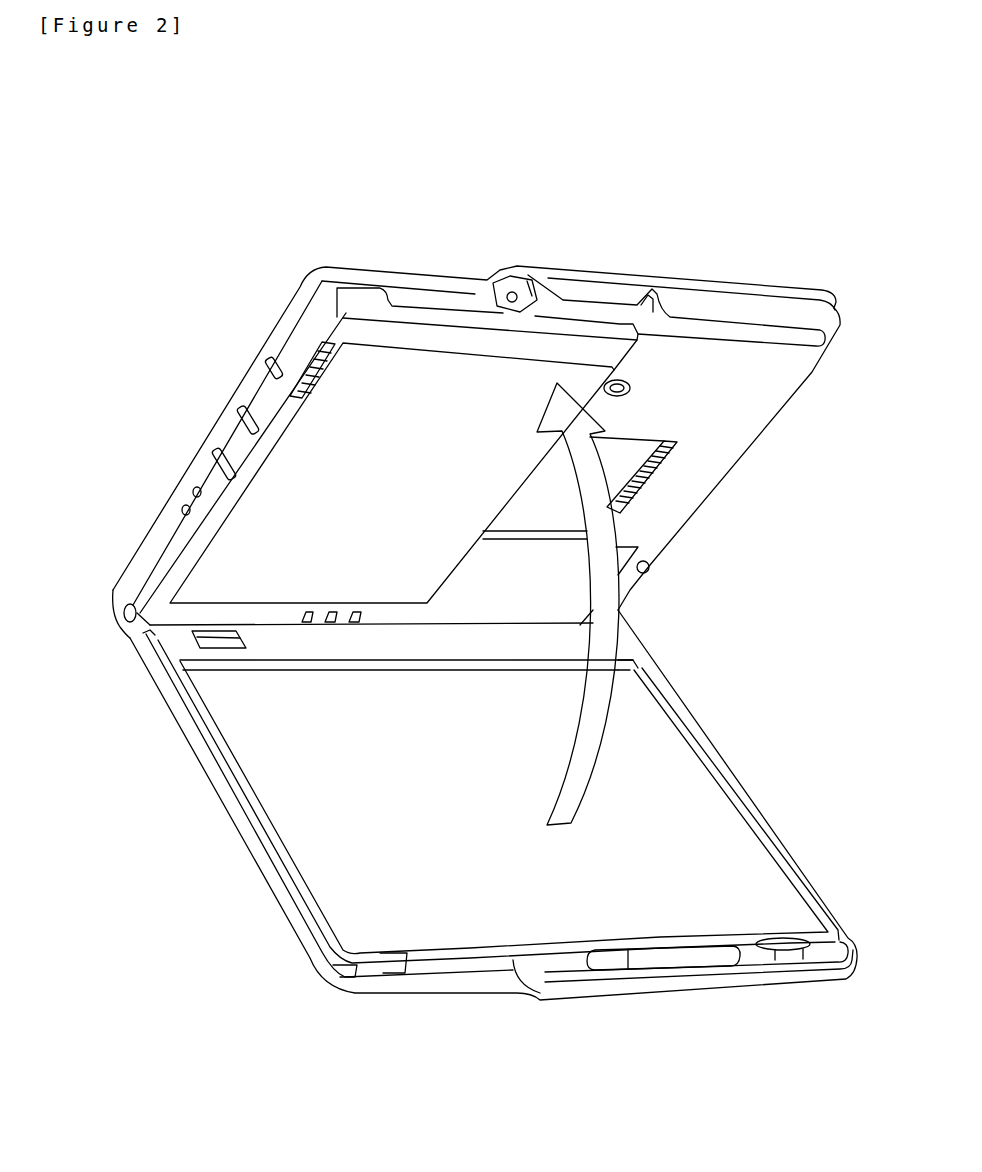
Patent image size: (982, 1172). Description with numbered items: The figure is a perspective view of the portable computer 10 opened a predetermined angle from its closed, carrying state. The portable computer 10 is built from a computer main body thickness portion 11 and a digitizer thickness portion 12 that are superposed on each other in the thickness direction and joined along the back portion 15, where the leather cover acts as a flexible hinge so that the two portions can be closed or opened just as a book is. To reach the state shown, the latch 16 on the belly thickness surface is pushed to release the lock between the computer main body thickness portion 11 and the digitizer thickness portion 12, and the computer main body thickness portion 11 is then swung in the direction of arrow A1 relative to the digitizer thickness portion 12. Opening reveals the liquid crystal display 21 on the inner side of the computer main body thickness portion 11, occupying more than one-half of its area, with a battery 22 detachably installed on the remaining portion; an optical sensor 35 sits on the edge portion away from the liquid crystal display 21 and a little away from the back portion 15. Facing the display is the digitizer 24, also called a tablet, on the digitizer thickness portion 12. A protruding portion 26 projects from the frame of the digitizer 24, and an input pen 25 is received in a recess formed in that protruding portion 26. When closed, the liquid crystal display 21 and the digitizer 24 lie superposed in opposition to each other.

The portable computer 10 is at (472, 181).
The computer main body thickness portion 11 is at (265, 385).
The digitizer thickness portion 12 is at (258, 843).
The back portion 15 is at (117, 612).
The latch 16 is at (525, 272).
The liquid crystal display 21 is at (368, 365).
The battery 22 is at (569, 577).
The digitizer 24 is at (677, 787).
The input pen 25 is at (712, 956).
The protruding portion 26 is at (567, 970).
The optical sensor 35 is at (651, 566).
The arrow A1 is at (603, 720).